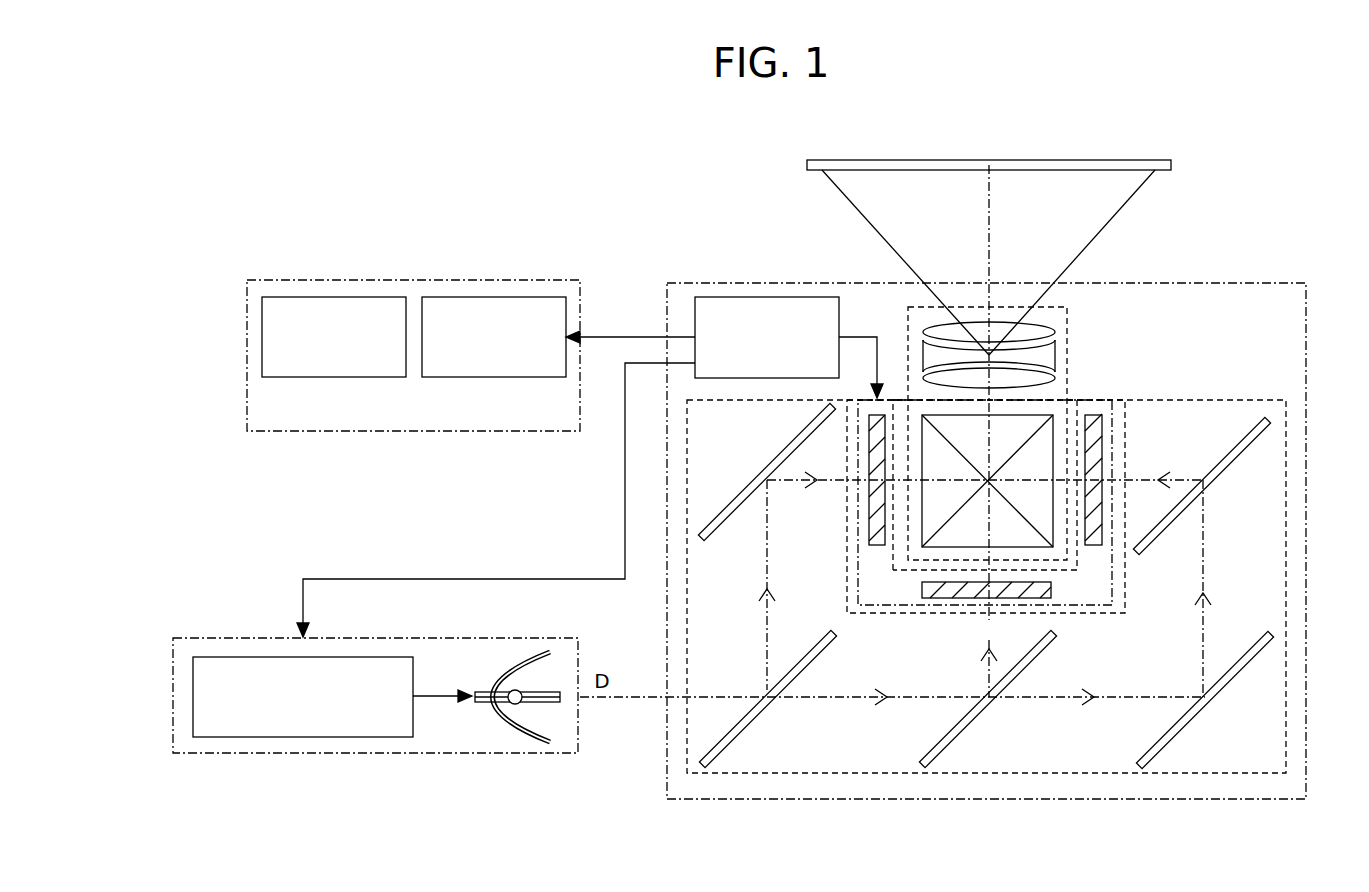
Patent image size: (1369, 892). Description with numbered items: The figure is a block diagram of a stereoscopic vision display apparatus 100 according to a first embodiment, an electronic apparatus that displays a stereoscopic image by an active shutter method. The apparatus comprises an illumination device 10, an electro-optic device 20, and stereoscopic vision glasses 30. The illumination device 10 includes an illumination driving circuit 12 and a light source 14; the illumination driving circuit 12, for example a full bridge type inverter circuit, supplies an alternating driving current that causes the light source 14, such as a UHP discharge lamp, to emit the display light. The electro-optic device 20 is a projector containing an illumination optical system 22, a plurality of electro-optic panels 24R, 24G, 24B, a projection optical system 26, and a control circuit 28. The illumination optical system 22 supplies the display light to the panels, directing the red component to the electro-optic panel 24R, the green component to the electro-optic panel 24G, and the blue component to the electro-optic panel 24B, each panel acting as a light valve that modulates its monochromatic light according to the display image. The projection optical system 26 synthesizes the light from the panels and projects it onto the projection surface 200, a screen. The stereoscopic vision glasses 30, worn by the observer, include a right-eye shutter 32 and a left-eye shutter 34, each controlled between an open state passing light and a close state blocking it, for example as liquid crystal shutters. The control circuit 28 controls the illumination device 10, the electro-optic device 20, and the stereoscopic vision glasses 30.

The stereoscopic vision display apparatus 100 is at (616, 224).
The projection surface 200 is at (1030, 160).
The electro-optic device 20 is at (1225, 283).
The illumination optical system 22 is at (1253, 400).
The electro-optic panel 24R is at (872, 527).
The electro-optic panel 24G is at (922, 592).
The electro-optic panel 24B is at (1097, 415).
The projection optical system 26 is at (1067, 310).
The control circuit 28 is at (839, 300).
The stereoscopic vision glasses 30 is at (412, 280).
The right-eye shutter 32 is at (530, 378).
The left-eye shutter 34 is at (362, 378).
The illumination device 10 is at (247, 637).
The illumination driving circuit 12 is at (413, 715).
The light source 14 is at (528, 745).